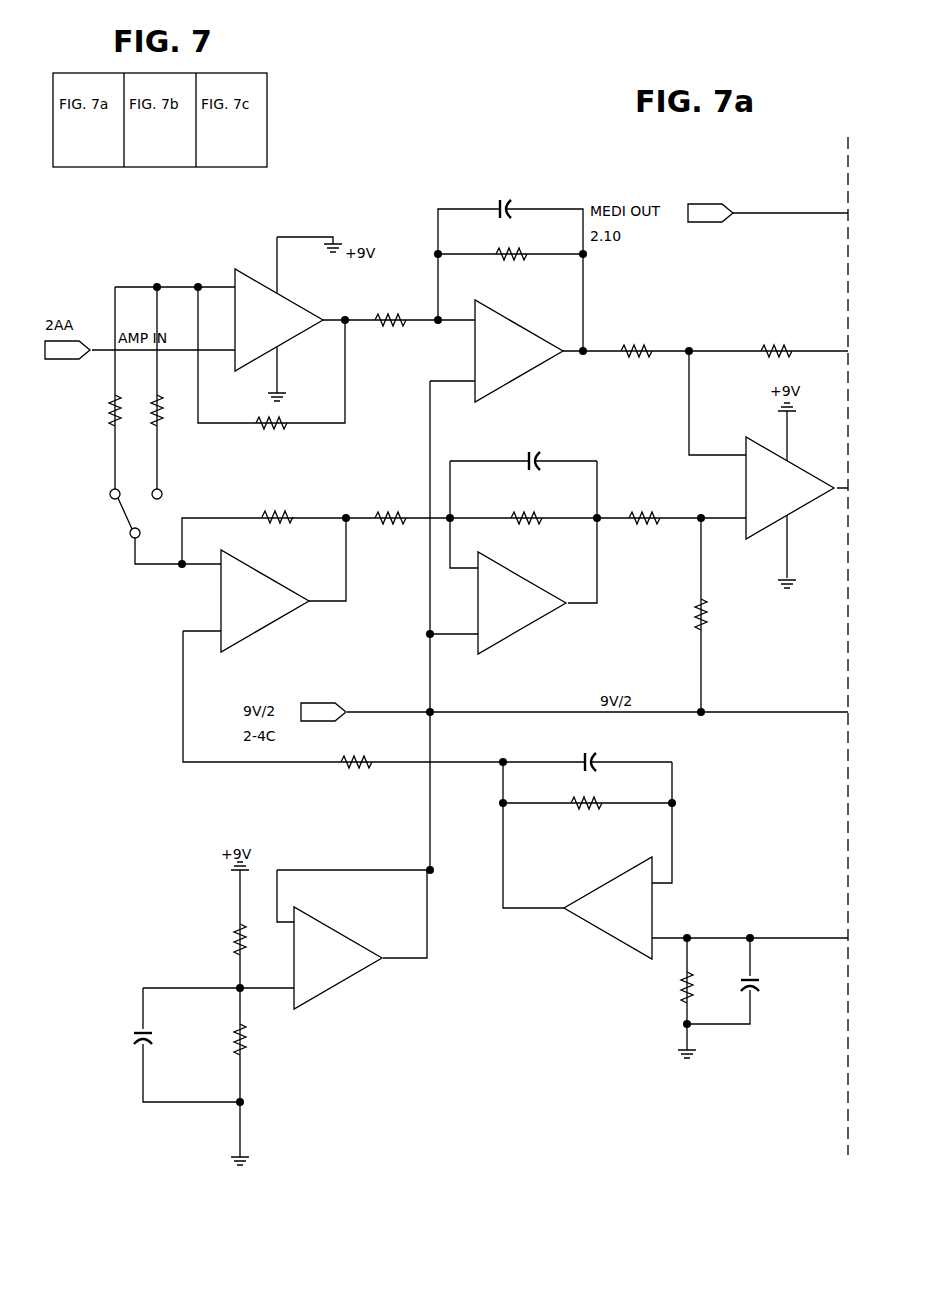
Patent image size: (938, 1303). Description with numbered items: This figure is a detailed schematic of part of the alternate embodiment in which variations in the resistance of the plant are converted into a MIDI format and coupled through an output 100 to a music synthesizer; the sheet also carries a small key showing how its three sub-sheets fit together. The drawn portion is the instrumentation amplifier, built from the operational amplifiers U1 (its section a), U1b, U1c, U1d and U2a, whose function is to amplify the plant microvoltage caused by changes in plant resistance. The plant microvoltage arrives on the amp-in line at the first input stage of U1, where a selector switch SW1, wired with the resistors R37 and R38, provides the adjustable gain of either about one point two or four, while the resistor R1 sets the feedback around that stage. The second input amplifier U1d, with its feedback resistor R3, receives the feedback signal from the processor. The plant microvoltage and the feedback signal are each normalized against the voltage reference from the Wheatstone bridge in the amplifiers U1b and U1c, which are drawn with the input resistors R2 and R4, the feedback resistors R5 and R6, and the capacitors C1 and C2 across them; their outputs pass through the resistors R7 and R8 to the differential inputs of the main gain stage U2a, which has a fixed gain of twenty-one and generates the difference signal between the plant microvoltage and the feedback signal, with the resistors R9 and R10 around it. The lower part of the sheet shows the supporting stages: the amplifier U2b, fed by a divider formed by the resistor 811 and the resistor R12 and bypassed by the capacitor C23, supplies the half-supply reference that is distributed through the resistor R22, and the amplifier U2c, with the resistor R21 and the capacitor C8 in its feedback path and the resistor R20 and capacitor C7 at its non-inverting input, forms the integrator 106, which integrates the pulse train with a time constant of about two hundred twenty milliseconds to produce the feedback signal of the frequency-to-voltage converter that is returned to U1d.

The output 100 is at (708, 204).
The integrator 106 is at (498, 980).
The resistor 811 is at (212, 940).
The operational amplifier U1 is at (255, 310).
The operational amplifier U1b is at (509, 367).
The operational amplifier U1c is at (518, 618).
The operational amplifier U1d is at (260, 611).
The main gain stage U2a is at (775, 479).
The operational amplifier U2b is at (336, 945).
The operational amplifier U2c is at (611, 930).
The resistor R1 is at (276, 413).
The resistor R2 is at (393, 324).
The resistor R3 is at (275, 510).
The resistor R4 is at (391, 514).
The resistor R5 is at (514, 259).
The resistor R6 is at (528, 516).
The resistor R7 is at (629, 352).
The resistor R8 is at (643, 518).
The resistor R9 is at (765, 331).
The resistor R10 is at (728, 618).
The resistor R12 is at (216, 1038).
The resistor R20 is at (665, 986).
The resistor R21 is at (581, 819).
The resistor R22 is at (360, 771).
The resistor R37 is at (94, 423).
The resistor R38 is at (186, 420).
The capacitor C1 is at (516, 190).
The capacitor C2 is at (545, 442).
The capacitor C7 is at (773, 977).
The capacitor C8 is at (605, 748).
The capacitor C23 is at (127, 1042).
The selector switch SW1 is at (142, 521).